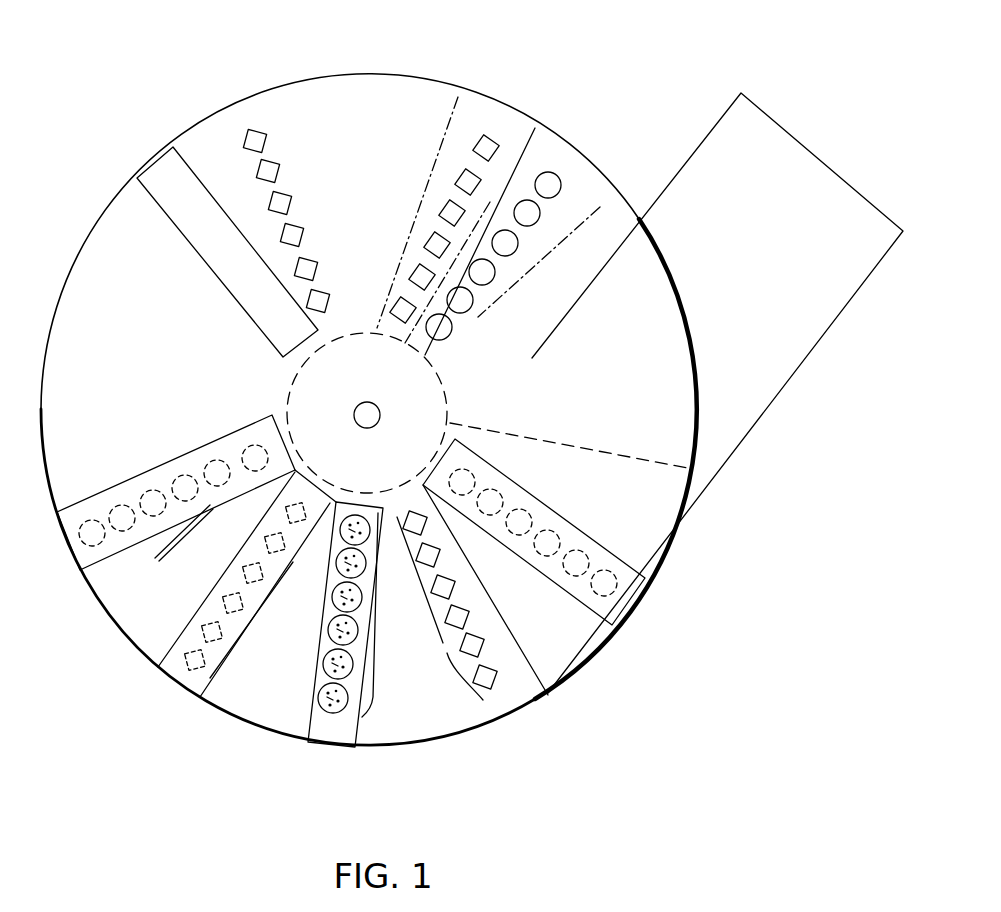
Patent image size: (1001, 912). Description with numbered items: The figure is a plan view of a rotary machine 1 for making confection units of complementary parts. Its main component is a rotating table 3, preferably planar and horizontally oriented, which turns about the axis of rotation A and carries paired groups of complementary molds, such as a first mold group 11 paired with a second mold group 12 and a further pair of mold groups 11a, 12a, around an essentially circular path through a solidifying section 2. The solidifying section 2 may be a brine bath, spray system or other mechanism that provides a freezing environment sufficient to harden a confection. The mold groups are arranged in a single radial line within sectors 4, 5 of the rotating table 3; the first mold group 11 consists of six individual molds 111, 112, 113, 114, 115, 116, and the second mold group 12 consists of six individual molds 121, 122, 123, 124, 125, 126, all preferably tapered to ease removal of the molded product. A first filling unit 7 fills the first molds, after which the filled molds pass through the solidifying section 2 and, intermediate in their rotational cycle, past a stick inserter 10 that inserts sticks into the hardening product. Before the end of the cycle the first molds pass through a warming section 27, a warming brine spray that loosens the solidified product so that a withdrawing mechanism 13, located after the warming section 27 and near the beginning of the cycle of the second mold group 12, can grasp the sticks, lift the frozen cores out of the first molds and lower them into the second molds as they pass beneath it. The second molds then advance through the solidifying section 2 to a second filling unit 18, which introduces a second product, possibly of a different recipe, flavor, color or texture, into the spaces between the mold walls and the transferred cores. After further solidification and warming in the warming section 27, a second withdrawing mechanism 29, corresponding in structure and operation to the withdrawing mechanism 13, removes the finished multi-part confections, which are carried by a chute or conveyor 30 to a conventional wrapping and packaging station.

The machine 1 is at (225, 73).
The solidifying section 2 is at (121, 317).
The rotating table 3 is at (458, 96).
The sector 4 is at (558, 152).
The sector 5 is at (497, 118).
The filling unit 7 is at (78, 556).
The stick inserter 10 is at (197, 247).
The first mold group 11 is at (169, 540).
The mold group 11a is at (378, 618).
The second mold group 12 is at (298, 560).
The mold group 12a is at (444, 648).
The withdrawing mechanism 13 is at (320, 716).
The second filling unit 18 is at (160, 670).
The warming section 27 is at (537, 637).
The withdrawing mechanism 29 is at (613, 610).
The chute or conveyor 30 is at (752, 234).
The mold 111 is at (254, 445).
The mold 112 is at (220, 472).
The mold 113 is at (186, 487).
The mold 114 is at (150, 502).
The mold 115 is at (118, 516).
The mold 116 is at (80, 522).
The mold 121 is at (310, 498).
The mold 122 is at (262, 544).
The mold 123 is at (240, 574).
The mold 124 is at (222, 603).
The mold 125 is at (200, 631).
The mold 126 is at (180, 660).
The axis of rotation A is at (380, 411).